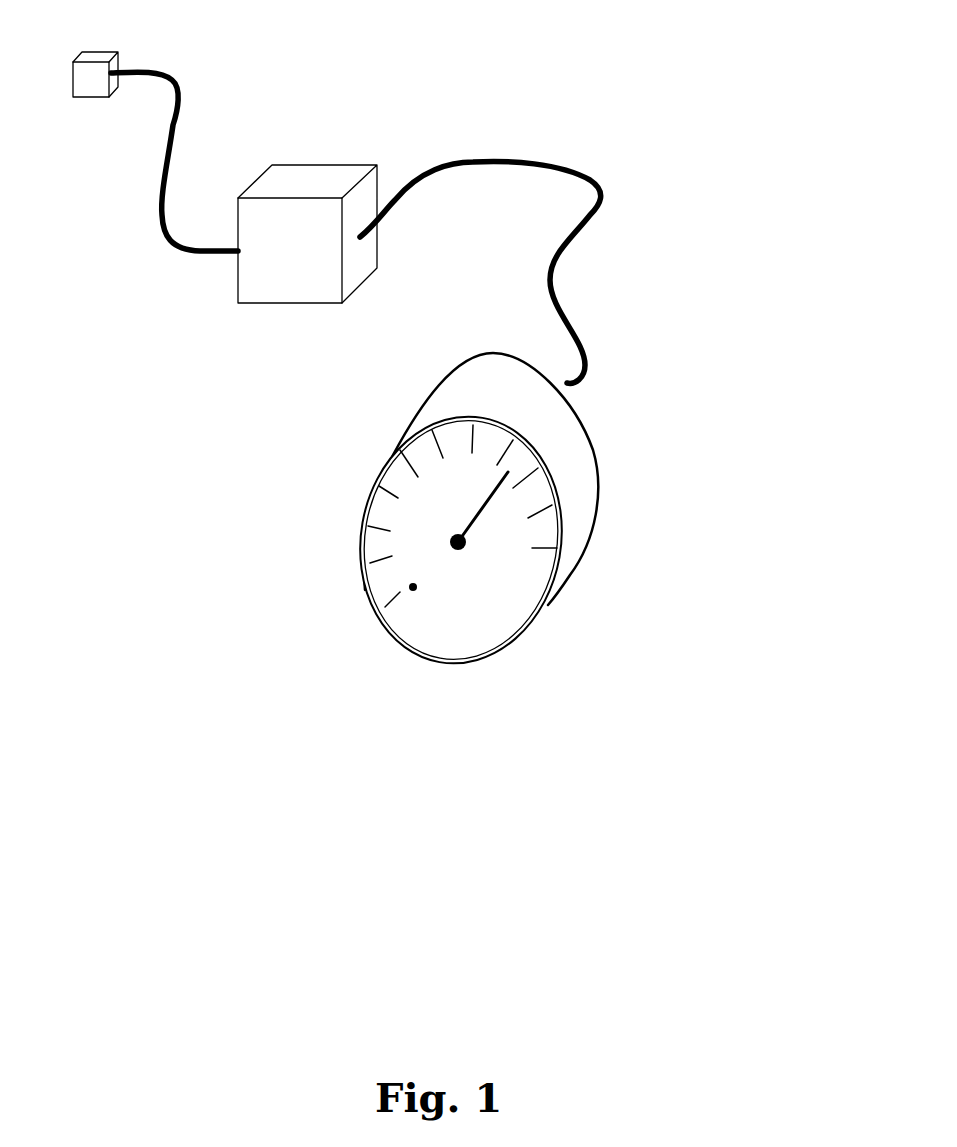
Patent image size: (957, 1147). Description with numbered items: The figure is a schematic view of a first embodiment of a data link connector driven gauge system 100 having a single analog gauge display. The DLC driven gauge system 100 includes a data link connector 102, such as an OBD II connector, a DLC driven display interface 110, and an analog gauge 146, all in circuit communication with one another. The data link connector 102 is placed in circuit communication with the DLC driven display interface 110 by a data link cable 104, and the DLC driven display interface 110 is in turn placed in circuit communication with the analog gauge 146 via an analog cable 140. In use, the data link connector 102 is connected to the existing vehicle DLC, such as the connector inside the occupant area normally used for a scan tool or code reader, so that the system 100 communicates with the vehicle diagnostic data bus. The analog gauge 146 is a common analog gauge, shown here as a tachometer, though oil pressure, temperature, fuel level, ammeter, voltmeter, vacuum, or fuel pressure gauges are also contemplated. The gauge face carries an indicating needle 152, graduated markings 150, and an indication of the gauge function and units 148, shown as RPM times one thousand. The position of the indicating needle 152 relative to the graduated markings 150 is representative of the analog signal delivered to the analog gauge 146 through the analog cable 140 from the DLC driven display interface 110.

The DLC driven gauge system 100 is at (683, 52).
The data link connector 102 is at (102, 50).
The data link cable 104 is at (175, 128).
The DLC driven display interface 110 is at (302, 165).
The analog cable 140 is at (595, 173).
The analog gauge 146 is at (592, 432).
The indication of gauge function and units 148 is at (450, 627).
The graduated markings 150 is at (363, 580).
The indicating needle 152 is at (473, 515).